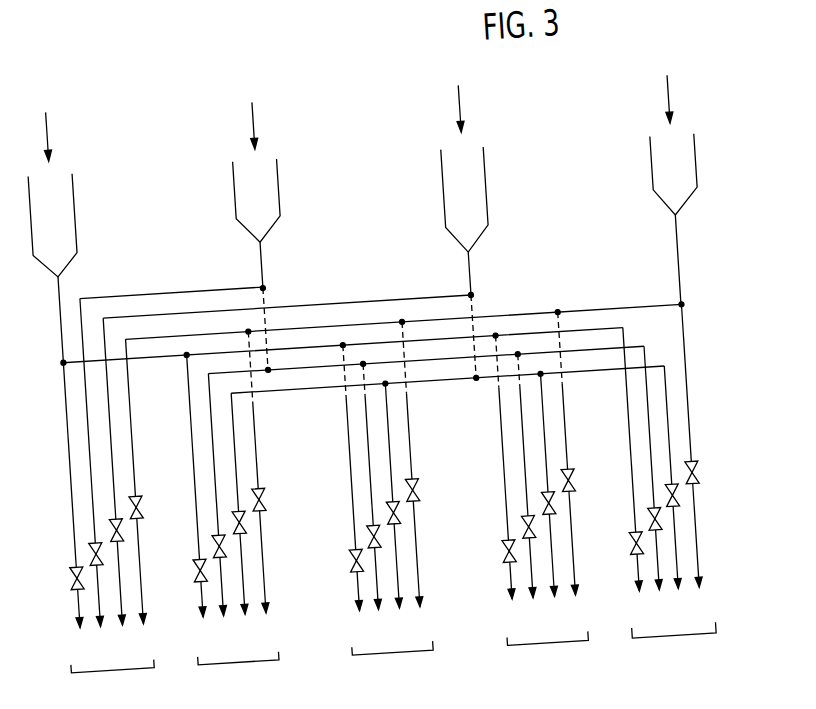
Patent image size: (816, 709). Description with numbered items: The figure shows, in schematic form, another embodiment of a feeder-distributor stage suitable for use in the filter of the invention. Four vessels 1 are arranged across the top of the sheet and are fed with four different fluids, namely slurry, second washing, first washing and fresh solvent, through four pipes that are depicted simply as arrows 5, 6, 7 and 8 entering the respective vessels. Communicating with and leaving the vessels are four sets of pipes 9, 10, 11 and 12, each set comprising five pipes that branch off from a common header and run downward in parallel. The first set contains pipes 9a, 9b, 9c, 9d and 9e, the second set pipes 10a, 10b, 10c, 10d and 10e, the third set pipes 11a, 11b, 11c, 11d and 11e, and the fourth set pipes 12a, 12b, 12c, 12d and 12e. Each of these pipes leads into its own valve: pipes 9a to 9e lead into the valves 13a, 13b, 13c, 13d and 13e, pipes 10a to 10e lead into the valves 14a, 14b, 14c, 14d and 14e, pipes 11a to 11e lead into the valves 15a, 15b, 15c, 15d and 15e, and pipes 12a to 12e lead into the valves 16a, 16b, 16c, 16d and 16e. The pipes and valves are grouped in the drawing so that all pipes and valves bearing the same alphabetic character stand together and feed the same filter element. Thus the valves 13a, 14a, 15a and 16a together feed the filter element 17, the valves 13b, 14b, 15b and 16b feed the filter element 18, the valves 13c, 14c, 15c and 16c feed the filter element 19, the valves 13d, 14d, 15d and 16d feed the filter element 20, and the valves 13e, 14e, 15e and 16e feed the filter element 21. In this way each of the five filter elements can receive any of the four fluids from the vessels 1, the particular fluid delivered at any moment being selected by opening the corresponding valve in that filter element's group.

The vessel 1 is at (364, 203).
The slurry feed pipe 5 is at (55, 136).
The second washing feed pipe 6 is at (262, 123).
The first washing feed pipe 7 is at (469, 108).
The fresh solvent feed pipe 8 is at (661, 98).
The set of pipes 9 is at (331, 304).
The set of pipes 10 is at (360, 300).
The set of pipes 11 is at (382, 321).
The set of pipes 12 is at (403, 277).
The pipe 9a is at (64, 496).
The pipe 10a is at (83, 462).
The pipe 11a is at (106, 472).
The pipe 12a is at (128, 482).
The pipe 9b is at (188, 486).
The pipe 10b is at (209, 494).
The pipe 11b is at (231, 504).
The pipe 12b is at (250, 472).
The pipe 9c is at (344, 478).
The pipe 10c is at (364, 487).
The pipe 11c is at (385, 496).
The pipe 12c is at (404, 465).
The pipe 9d is at (497, 467).
The pipe 10d is at (519, 476).
The pipe 11d is at (541, 486).
The pipe 12d is at (560, 454).
The pipe 9e is at (624, 459).
The pipe 10e is at (645, 468).
The pipe 11e is at (664, 478).
The pipe 12e is at (683, 446).
The valve 13a is at (70, 565).
The valve 14a is at (89, 541).
The valve 15a is at (109, 517).
The valve 16a is at (129, 494).
The valve 13b is at (193, 557).
The valve 14b is at (212, 533).
The valve 15b is at (232, 509).
The valve 16b is at (252, 486).
The valve 13c is at (349, 547).
The valve 14c is at (367, 523).
The valve 15c is at (386, 499).
The valve 16c is at (405, 477).
The valve 13d is at (502, 538).
The valve 14d is at (521, 514).
The valve 15d is at (541, 490).
The valve 16d is at (561, 467).
The valve 13e is at (629, 530).
The valve 14e is at (648, 506).
The valve 15e is at (665, 482).
The valve 16e is at (685, 459).
The filter element 17 is at (113, 681).
The filter element 18 is at (239, 673).
The filter element 19 is at (393, 662).
The filter element 20 is at (548, 652).
The filter element 21 is at (675, 644).